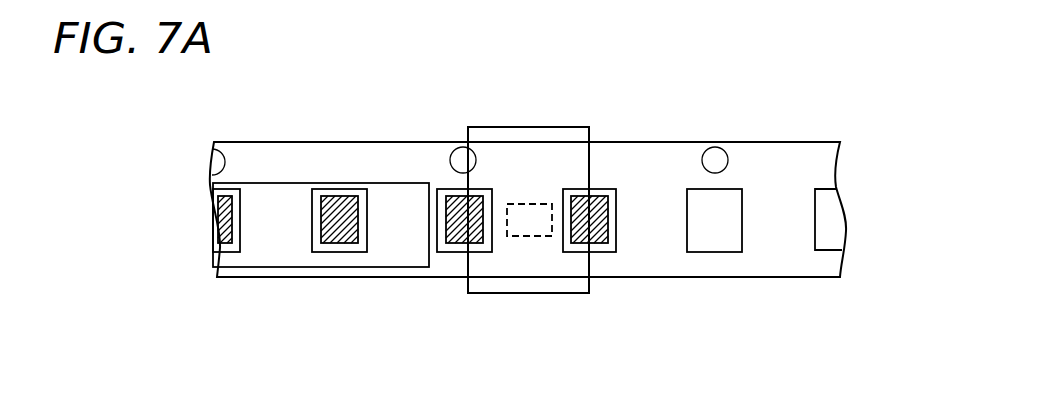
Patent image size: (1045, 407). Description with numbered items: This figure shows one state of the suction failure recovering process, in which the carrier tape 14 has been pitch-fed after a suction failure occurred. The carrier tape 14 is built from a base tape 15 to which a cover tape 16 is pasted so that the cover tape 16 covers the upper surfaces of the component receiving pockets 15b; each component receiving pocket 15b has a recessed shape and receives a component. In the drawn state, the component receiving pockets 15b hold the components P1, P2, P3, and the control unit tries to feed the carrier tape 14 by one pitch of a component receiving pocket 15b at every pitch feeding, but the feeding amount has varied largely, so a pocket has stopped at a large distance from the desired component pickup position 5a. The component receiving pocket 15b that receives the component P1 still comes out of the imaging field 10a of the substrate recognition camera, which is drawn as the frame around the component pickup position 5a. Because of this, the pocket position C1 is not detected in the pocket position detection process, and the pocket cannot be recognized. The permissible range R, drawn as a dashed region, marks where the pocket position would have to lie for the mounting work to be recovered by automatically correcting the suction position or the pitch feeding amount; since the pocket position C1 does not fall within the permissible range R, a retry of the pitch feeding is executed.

The carrier tape 14 is at (195, 215).
The base tape 15 is at (297, 157).
The cover tape 16 is at (272, 195).
The component receiving pocket 15b is at (447, 190).
The component P1 is at (472, 238).
The component P2 is at (346, 236).
The component P3 is at (225, 243).
The pocket position C1 is at (463, 218).
The permissible range R is at (553, 232).
The component pickup position 5a is at (552, 108).
The imaging field 10a is at (580, 135).